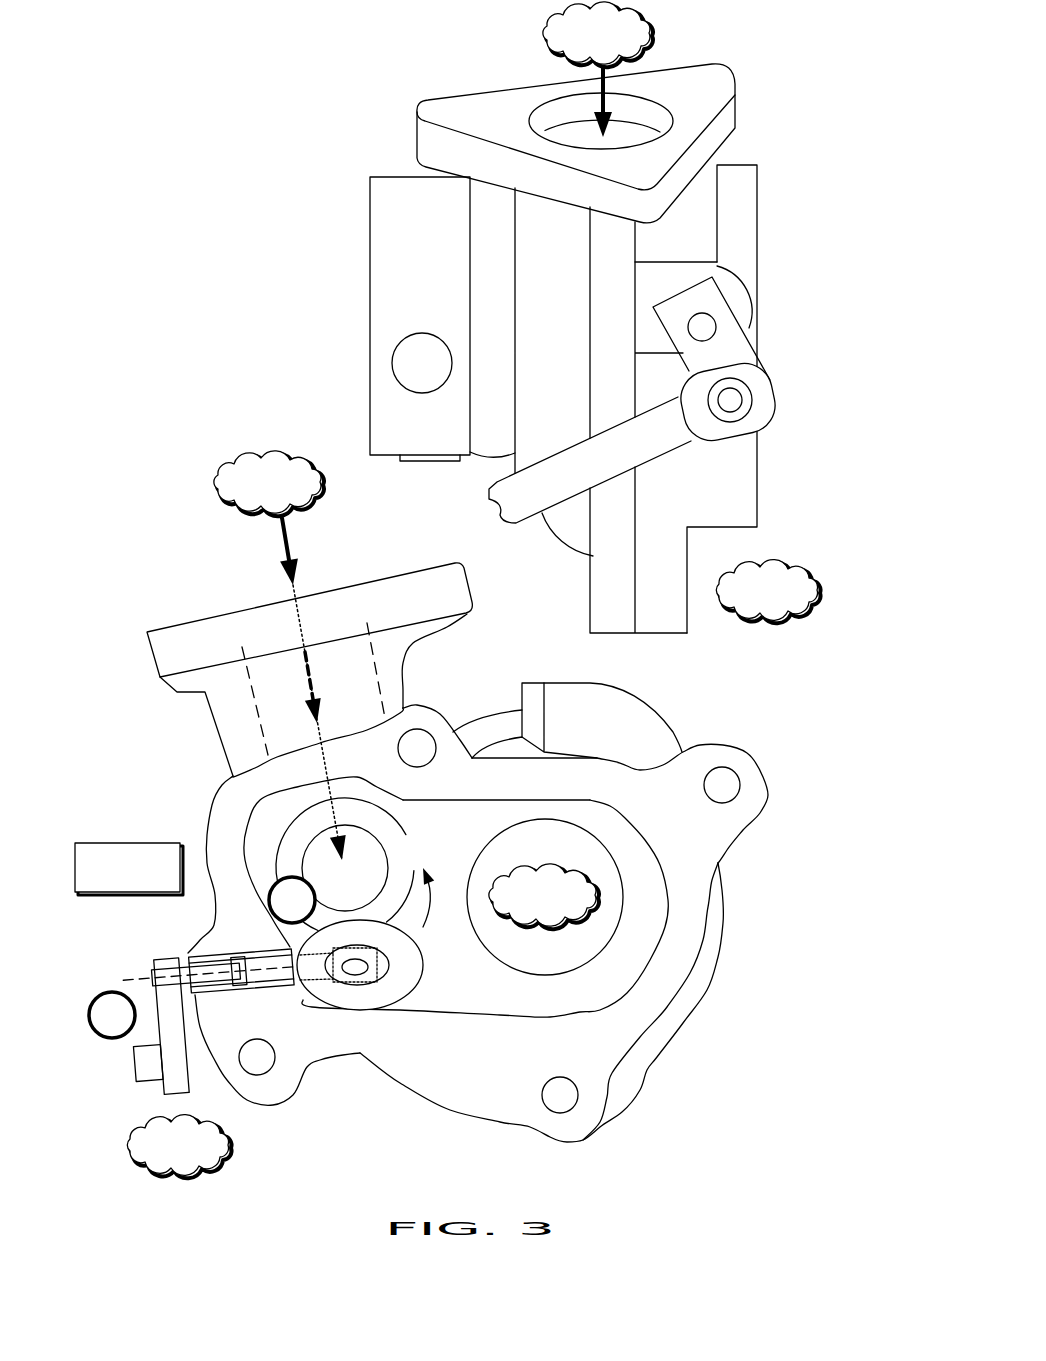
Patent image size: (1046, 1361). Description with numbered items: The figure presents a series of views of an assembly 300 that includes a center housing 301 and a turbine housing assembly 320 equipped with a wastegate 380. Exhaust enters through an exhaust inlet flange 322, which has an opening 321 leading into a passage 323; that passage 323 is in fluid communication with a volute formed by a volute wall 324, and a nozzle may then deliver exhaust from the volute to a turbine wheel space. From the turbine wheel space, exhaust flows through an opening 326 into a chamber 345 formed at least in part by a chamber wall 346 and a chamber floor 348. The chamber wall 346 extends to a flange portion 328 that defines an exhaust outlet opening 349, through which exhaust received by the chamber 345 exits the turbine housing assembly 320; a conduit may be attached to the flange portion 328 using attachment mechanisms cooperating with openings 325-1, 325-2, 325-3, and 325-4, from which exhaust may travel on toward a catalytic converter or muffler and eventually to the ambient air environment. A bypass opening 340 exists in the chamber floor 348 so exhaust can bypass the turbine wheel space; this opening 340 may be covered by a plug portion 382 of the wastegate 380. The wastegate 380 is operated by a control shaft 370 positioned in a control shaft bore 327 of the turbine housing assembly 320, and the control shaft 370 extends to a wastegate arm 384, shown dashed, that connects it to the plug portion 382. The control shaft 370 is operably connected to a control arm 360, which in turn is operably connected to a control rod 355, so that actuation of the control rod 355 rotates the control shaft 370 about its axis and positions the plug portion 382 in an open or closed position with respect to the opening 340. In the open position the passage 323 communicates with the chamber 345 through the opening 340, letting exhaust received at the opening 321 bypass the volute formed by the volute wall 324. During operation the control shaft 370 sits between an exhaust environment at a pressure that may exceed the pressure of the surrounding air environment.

The assembly 300 is at (228, 103).
The center housing 301 is at (368, 240).
The turbine housing assembly 320 is at (733, 163).
The opening 321 is at (660, 100).
The exhaust inlet flange 322 is at (732, 95).
The passage 323 is at (252, 683).
The volute wall 324 is at (570, 560).
The opening 325-1 is at (740, 793).
The opening 325-2 is at (573, 1103).
The opening 325-3 is at (267, 1072).
The opening 325-4 is at (420, 728).
The opening 326 is at (530, 978).
The control shaft bore 327 is at (258, 990).
The flange portion 328 is at (758, 205).
The opening 340 is at (262, 838).
The chamber 345 is at (561, 862).
The chamber wall 346 is at (618, 818).
The chamber floor 348 is at (477, 833).
The exhaust outlet opening 349 is at (665, 892).
The control rod 355 is at (660, 455).
The control arm 360 is at (763, 355).
The control shaft 370 is at (715, 317).
The wastegate 380 is at (377, 978).
The plug portion 382 is at (420, 967).
The wastegate arm 384 is at (343, 983).